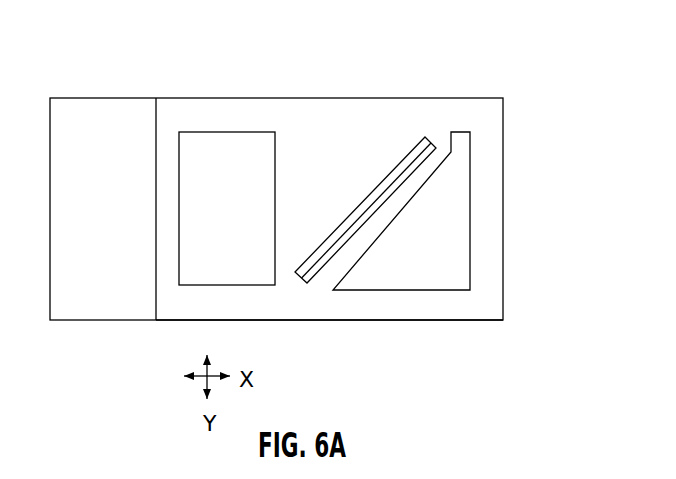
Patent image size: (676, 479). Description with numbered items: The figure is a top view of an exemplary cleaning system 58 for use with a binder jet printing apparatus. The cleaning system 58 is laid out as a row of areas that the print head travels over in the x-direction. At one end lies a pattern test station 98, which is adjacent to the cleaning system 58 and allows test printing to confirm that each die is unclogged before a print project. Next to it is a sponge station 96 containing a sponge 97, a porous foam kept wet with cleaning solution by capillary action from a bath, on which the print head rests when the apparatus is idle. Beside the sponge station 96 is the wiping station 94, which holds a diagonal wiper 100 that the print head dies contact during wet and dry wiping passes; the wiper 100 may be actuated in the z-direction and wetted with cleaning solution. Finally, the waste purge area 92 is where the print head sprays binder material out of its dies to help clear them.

The cleaning system 58 is at (522, 241).
The waste purge area 92 is at (413, 283).
The wiping station 94 is at (414, 144).
The sponge station 96 is at (177, 320).
The sponge 97 is at (253, 177).
The pattern test station 98 is at (108, 111).
The wiper 100 is at (378, 195).